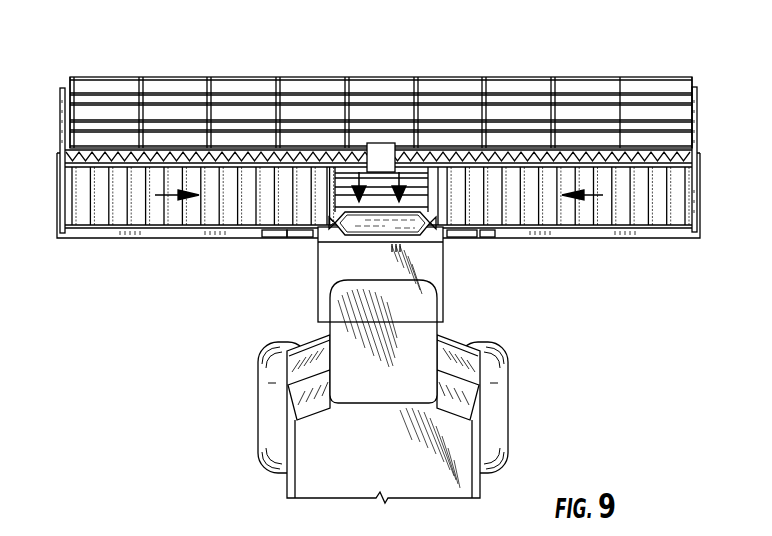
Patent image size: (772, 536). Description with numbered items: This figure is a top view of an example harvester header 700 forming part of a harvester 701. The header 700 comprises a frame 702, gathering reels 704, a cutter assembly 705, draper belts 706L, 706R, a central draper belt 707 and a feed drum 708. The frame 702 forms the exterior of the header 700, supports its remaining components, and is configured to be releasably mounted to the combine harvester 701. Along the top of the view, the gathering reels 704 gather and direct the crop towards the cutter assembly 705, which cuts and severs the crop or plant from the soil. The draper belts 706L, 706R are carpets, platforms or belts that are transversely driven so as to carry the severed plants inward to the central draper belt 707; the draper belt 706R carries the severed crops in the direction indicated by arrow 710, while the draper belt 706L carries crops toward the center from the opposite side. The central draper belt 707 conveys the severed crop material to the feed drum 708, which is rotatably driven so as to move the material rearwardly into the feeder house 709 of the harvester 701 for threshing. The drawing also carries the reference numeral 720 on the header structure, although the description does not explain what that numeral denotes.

The harvester header 700 is at (395, 162).
The harvester 701 is at (562, 348).
The frame 702 is at (698, 128).
The gathering reels 704 is at (522, 78).
The cutter assembly 705 is at (582, 158).
The draper belt 706L is at (80, 212).
The draper belt 706R is at (678, 202).
The central draper belt 707 is at (340, 197).
The feed drum 708 is at (403, 222).
The feeder house 709 is at (318, 272).
The arrow 710 is at (167, 200).
The header frame 720 is at (668, 183).